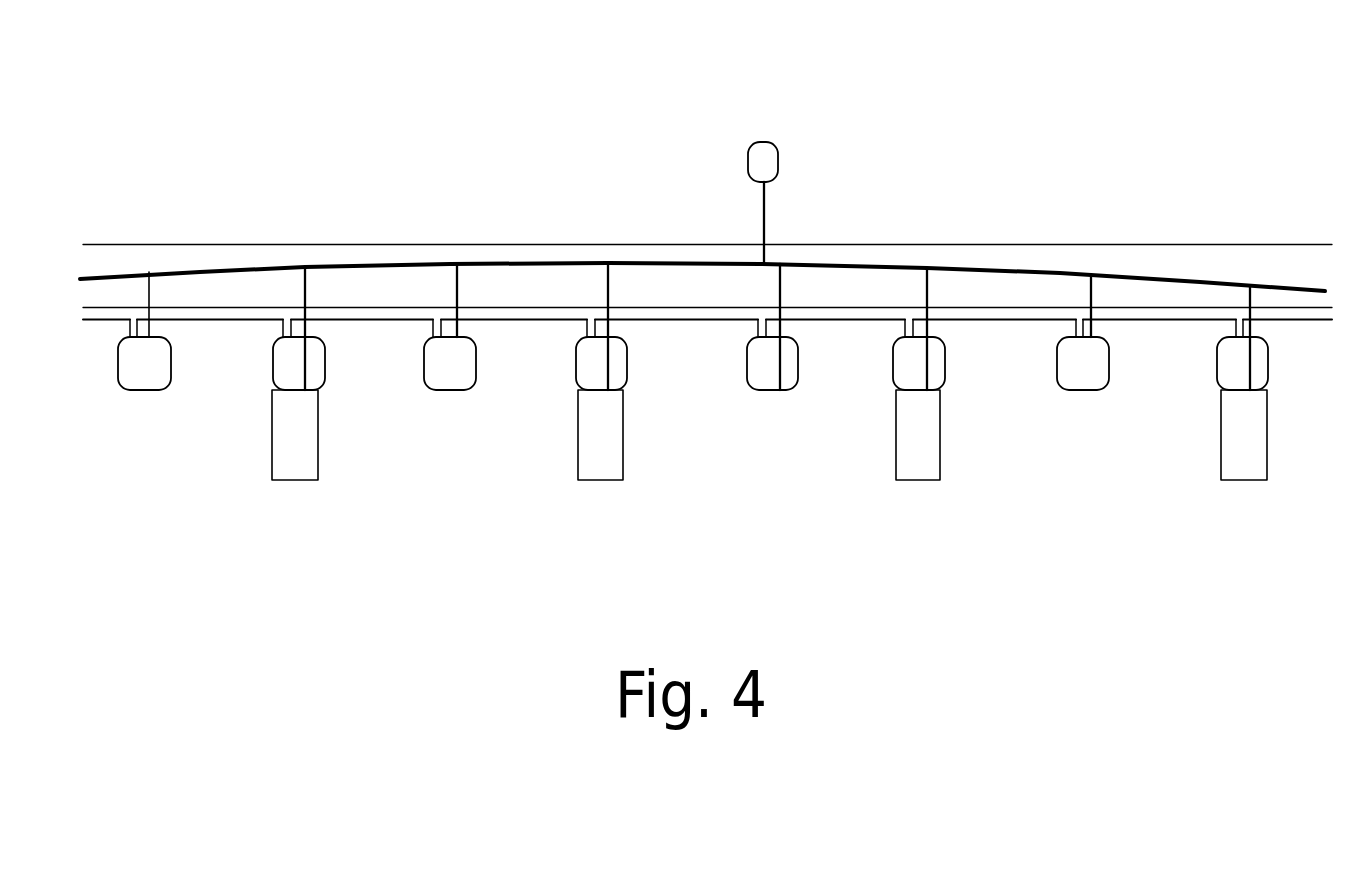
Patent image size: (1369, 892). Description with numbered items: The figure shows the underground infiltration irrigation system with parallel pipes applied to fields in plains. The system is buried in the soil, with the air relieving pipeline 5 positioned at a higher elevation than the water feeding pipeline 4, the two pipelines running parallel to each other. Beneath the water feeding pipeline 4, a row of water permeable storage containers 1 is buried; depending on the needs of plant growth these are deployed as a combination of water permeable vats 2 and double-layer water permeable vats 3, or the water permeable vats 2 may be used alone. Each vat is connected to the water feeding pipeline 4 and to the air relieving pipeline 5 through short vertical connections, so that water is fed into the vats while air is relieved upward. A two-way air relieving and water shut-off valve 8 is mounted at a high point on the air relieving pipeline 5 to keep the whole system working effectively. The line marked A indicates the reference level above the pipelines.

The water permeable storage container 1 is at (773, 380).
The water permeable vat 2 is at (142, 385).
The double-layer water permeable vat 3 is at (292, 473).
The water feeding pipeline 4 is at (368, 322).
The air relieving pipeline 5 is at (632, 263).
The two-way air relieving and water shut-off valve 8 is at (767, 140).
The reference line A is at (229, 243).